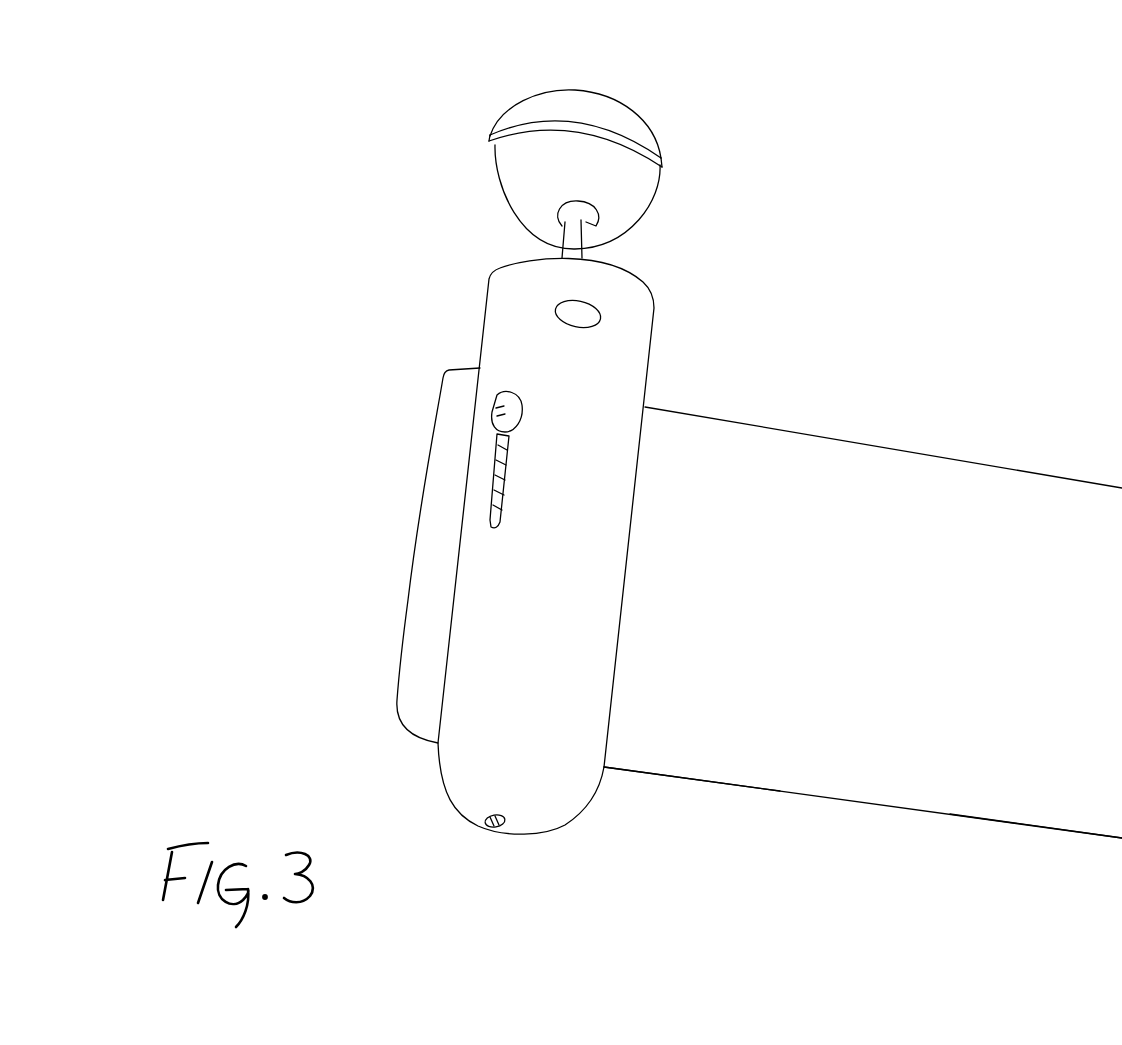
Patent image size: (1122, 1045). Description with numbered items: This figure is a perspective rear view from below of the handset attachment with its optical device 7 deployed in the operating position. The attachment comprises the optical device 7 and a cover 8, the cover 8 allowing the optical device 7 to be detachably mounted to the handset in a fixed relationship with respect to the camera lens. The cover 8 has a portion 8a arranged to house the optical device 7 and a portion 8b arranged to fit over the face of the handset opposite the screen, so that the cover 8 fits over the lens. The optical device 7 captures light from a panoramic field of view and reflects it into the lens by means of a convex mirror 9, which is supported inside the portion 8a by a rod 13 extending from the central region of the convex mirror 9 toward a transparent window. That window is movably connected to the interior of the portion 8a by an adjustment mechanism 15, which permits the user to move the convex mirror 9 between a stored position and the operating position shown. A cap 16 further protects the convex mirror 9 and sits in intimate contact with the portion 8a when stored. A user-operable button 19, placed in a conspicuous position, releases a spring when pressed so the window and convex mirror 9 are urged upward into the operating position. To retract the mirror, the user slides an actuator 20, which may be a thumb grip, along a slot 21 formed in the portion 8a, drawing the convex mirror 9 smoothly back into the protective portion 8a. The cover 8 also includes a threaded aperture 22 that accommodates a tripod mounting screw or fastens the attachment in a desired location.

The optical device 7 is at (524, 470).
The cover 8 is at (852, 652).
The portion of the cover 8a is at (681, 809).
The portion of the cover 8b is at (1036, 861).
The convex mirror 9 is at (538, 197).
The rod 13 is at (626, 243).
The adjustment mechanism 15 is at (513, 546).
The cap 16 is at (562, 100).
The user-operable button 19 is at (642, 333).
The actuator 20 is at (421, 412).
The slot 21 is at (414, 484).
The threaded aperture 22 is at (526, 859).